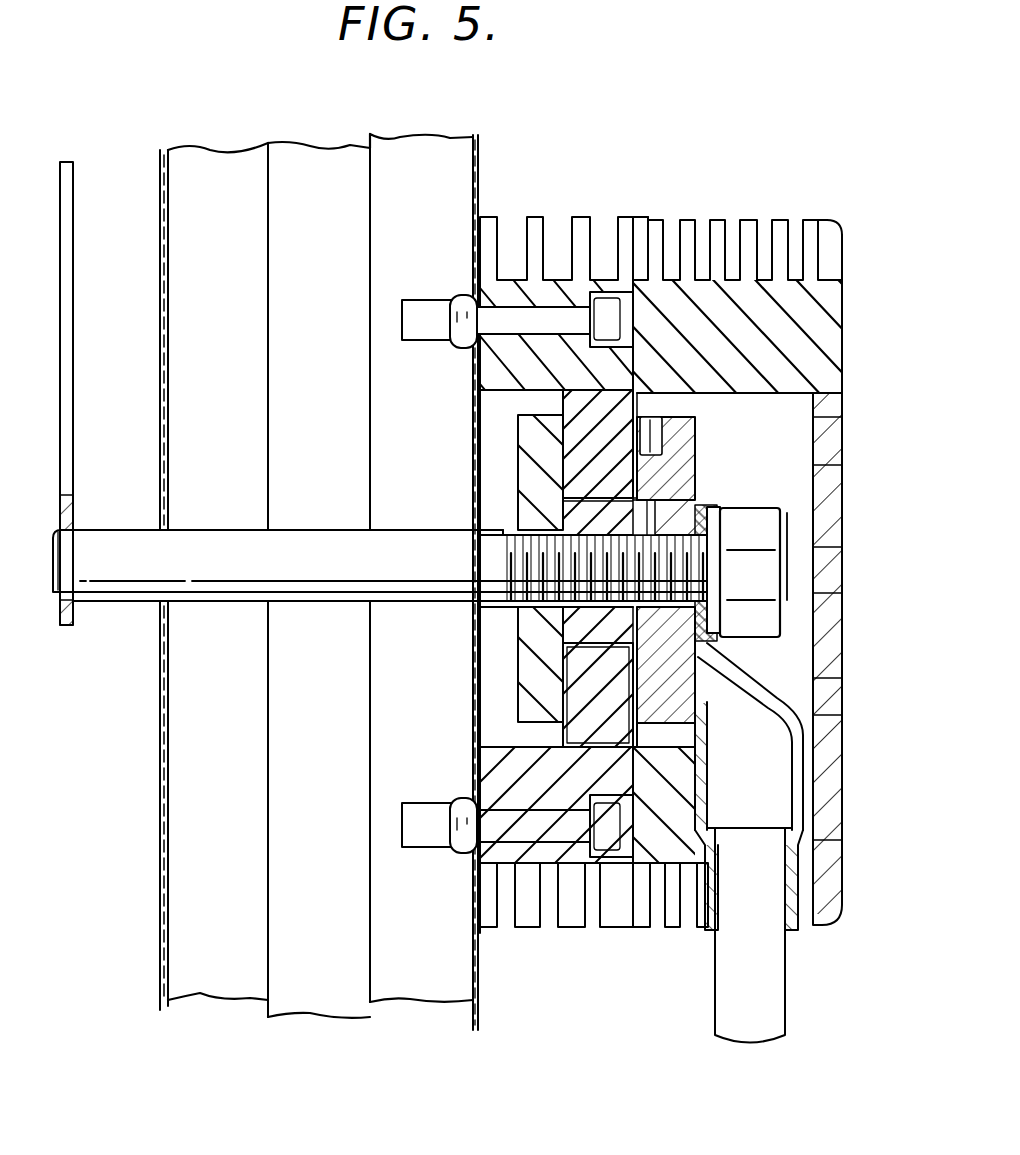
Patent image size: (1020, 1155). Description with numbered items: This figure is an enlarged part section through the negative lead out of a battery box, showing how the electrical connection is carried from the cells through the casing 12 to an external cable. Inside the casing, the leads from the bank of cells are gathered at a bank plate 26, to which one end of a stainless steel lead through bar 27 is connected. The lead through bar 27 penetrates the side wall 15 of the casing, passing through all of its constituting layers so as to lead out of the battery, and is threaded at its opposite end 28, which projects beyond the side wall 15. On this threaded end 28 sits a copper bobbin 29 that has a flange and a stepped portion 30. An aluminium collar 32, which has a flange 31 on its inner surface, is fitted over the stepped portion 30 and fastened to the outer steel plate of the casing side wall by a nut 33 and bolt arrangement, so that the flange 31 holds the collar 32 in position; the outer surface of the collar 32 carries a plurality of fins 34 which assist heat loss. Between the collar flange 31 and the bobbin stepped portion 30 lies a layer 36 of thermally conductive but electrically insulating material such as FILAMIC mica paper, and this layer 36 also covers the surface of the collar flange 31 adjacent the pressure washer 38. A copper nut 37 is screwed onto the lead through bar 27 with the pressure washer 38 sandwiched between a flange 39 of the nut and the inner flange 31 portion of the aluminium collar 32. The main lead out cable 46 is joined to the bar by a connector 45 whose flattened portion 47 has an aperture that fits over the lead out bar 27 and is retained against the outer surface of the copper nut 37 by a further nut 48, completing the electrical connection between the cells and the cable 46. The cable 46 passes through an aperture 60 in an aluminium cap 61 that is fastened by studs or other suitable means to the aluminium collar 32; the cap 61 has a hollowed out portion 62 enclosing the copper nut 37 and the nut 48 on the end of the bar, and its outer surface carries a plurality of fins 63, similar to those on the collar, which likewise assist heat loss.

The casing 12 is at (280, 122).
The side wall 15 is at (385, 980).
The bank plate 26 is at (70, 172).
The lead through bar 27 is at (122, 585).
The threaded end 28 is at (510, 604).
The copper bobbin 29 is at (532, 430).
The stepped portion 30 is at (583, 515).
The flange 31 is at (583, 458).
The aluminium collar 32 is at (520, 290).
The nut 33 is at (420, 838).
The fins 34 is at (618, 915).
The layer of thermally conductive and electrically insulating material 36 is at (558, 699).
The copper nut 37 is at (682, 455).
The pressure washer 38 is at (637, 478).
The flange 39 is at (700, 470).
The connector 45 is at (775, 790).
The lead out cable 46 is at (770, 1016).
The flattened portion 47 is at (720, 520).
The nut 48 is at (757, 553).
The aperture 60 is at (793, 932).
The aluminium cap 61 is at (770, 305).
The hollowed out portion 62 is at (805, 608).
The fins 63 is at (730, 218).